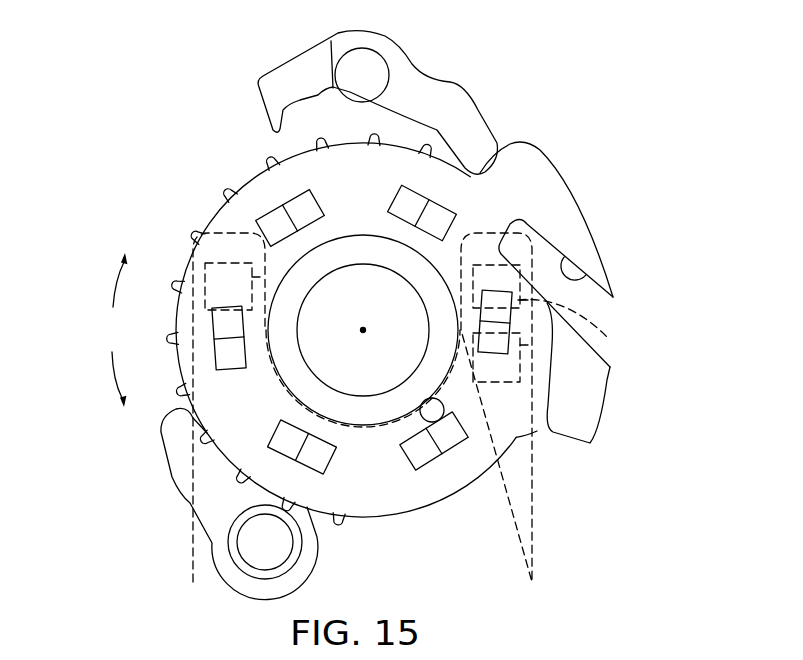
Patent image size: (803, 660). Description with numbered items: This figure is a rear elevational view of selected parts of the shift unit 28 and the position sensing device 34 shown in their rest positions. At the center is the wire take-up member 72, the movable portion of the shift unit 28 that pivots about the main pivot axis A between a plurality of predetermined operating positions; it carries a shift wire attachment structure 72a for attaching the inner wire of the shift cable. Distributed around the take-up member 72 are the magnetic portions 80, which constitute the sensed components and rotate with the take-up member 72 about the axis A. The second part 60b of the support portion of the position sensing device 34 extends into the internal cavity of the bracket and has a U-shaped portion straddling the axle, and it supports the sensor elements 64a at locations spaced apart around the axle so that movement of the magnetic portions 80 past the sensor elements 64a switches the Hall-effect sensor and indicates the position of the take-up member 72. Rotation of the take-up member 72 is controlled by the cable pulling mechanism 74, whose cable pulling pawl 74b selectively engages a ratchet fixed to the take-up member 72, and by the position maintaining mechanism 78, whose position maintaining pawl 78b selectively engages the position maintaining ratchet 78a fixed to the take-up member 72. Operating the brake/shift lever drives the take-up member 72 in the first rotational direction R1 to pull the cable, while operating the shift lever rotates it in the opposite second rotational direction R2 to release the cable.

The shift unit 28 is at (616, 162).
The position sensing device 34 is at (576, 484).
The second part of the support portion 60b is at (534, 528).
The sensor elements 64a is at (205, 278).
The wire take-up member 72 is at (211, 220).
The shift wire attachment structure 72a is at (583, 278).
The cable pulling mechanism 74 is at (182, 548).
The cable pulling pawl 74b is at (190, 468).
The position maintaining mechanism 78 is at (448, 42).
The position maintaining ratchet 78a is at (220, 190).
The position maintaining pawl 78b is at (478, 110).
The magnetic portions 80 is at (393, 200).
The main pivot axis A is at (366, 332).
The first rotational direction R1 is at (112, 287).
The second rotational direction R2 is at (113, 378).